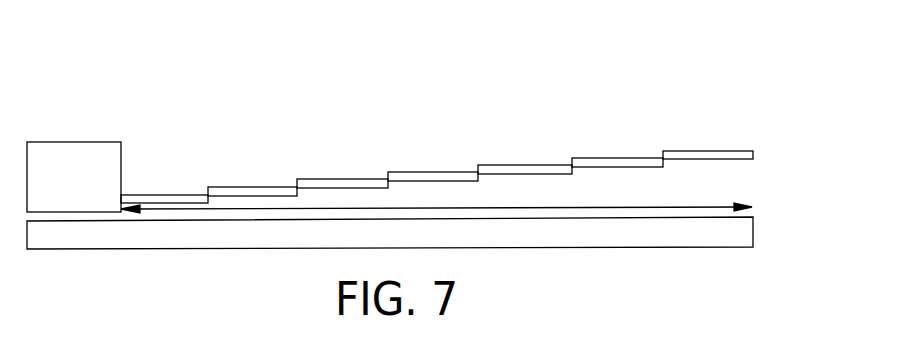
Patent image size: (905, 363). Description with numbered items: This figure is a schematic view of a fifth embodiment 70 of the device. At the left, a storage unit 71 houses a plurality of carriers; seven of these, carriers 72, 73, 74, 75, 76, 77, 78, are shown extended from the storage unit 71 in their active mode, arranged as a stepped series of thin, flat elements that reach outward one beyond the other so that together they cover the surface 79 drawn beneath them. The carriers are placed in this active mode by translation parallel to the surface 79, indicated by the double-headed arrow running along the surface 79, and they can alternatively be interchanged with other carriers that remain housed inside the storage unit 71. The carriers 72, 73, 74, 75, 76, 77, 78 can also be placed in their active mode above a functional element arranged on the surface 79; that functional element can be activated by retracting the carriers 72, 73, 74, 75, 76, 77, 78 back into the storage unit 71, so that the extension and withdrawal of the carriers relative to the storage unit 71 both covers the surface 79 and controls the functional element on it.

The fifth embodiment 70 is at (702, 68).
The storage unit 71 is at (72, 157).
The carrier 72 is at (161, 195).
The carrier 73 is at (251, 187).
The carrier 74 is at (343, 179).
The carrier 75 is at (434, 172).
The carrier 76 is at (526, 165).
The carrier 77 is at (617, 158).
The carrier 78 is at (708, 151).
The surface 79 is at (597, 208).